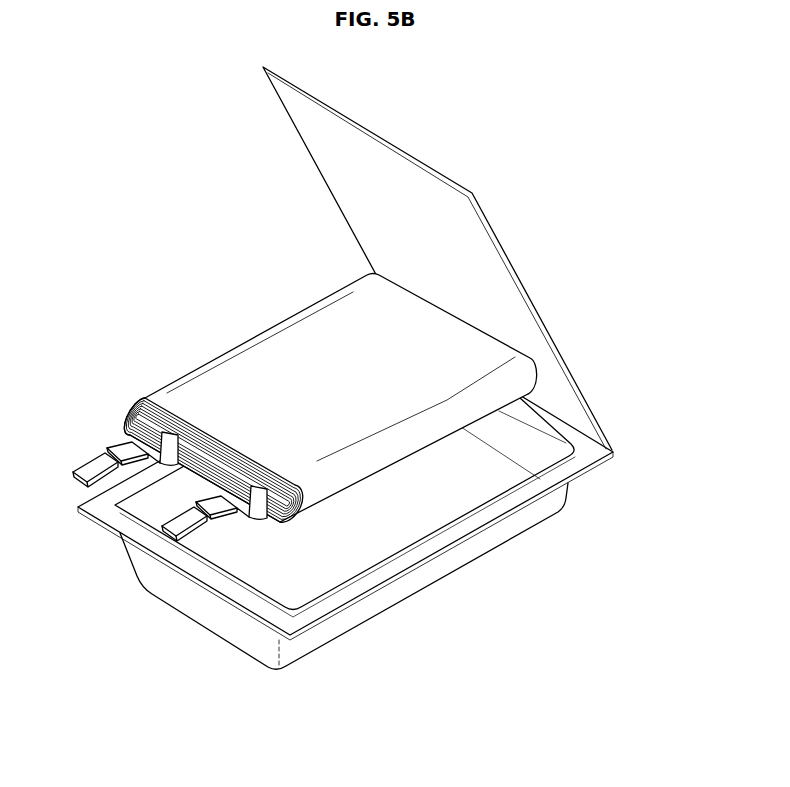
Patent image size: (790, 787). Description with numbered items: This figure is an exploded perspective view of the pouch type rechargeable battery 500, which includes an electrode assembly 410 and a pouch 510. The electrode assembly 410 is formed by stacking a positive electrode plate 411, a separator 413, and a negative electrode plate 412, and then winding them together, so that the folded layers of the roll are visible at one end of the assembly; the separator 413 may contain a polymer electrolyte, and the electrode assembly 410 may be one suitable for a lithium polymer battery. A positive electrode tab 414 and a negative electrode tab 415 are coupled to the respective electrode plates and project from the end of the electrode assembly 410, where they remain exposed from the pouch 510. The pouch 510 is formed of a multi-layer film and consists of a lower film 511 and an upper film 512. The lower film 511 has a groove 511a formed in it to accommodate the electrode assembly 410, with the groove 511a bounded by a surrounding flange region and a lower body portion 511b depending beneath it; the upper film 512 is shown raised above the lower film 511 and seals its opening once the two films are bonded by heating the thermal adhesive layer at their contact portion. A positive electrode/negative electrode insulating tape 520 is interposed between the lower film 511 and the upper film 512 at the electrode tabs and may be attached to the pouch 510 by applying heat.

The pouch type rechargeable battery 500 is at (115, 146).
The electrode assembly 410 is at (300, 398).
The positive electrode plate 411 is at (131, 423).
The negative electrode plate 412 is at (139, 396).
The separator 413 is at (132, 406).
The positive electrode tab 414 is at (266, 522).
The negative electrode tab 415 is at (158, 466).
The pouch 510 is at (394, 372).
The lower film 511 is at (372, 501).
The groove 511a is at (386, 532).
The accommodating portion 511b is at (237, 594).
The upper film 512 is at (608, 438).
The positive electrode/negative electrode insulating tape 520 is at (103, 449).